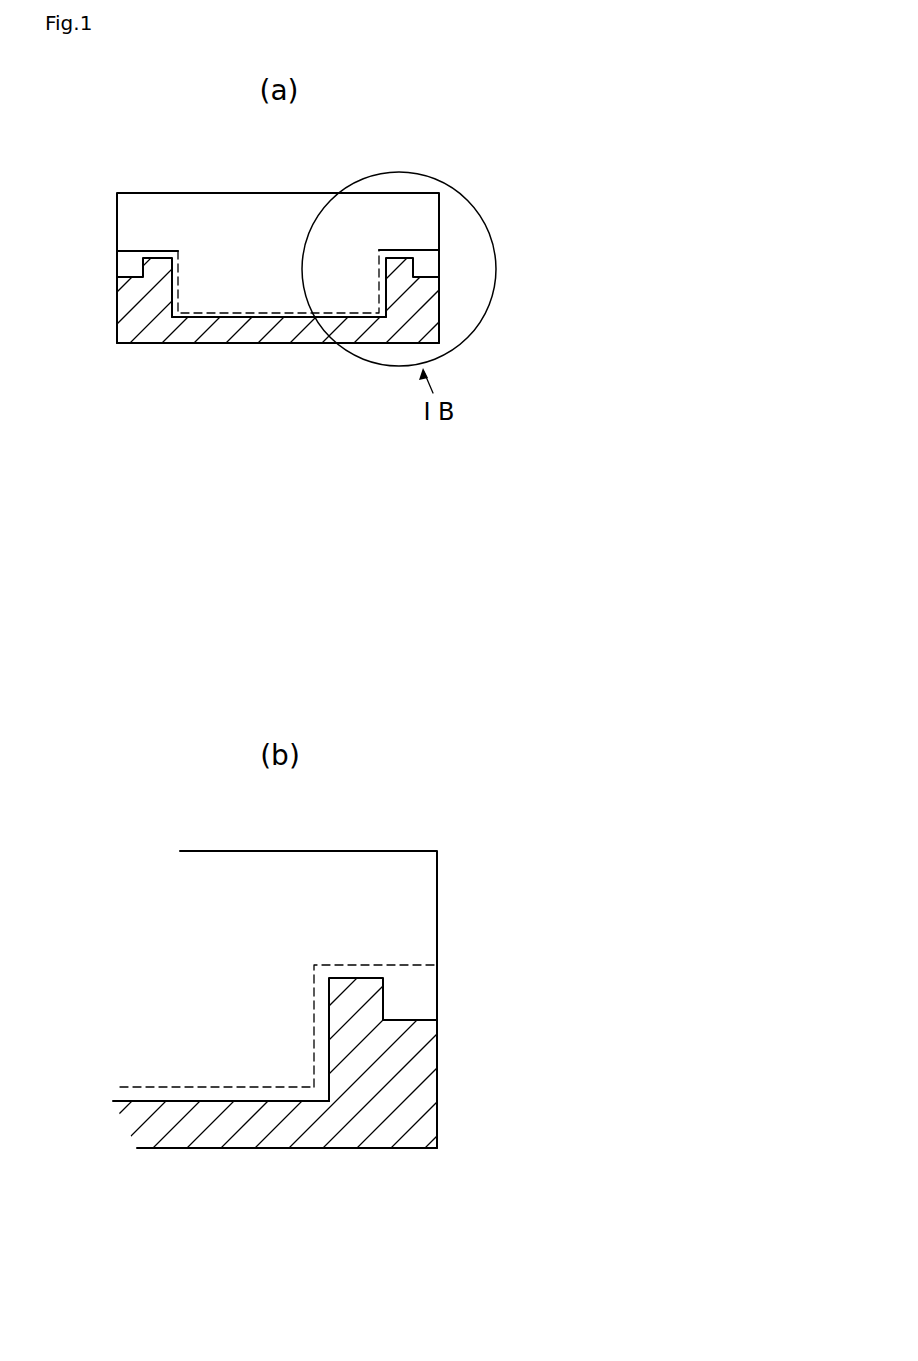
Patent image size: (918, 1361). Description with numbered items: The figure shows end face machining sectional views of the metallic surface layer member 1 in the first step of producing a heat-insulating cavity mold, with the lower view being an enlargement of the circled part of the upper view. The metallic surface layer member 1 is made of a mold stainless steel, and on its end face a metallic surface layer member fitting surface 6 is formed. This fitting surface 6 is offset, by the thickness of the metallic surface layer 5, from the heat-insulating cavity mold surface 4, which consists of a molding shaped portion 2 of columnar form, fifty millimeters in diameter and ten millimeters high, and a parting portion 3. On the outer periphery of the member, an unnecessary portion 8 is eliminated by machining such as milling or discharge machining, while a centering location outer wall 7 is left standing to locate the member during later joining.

The metallic surface layer member 1 is at (403, 202).
The molding shaped portion 2 is at (238, 1087).
The parting portion 3 is at (397, 965).
The heat-insulating cavity mold surface 4 is at (358, 668).
The metallic surface layer 5 is at (293, 1093).
The metallic surface layer member fitting surface 6 is at (280, 1103).
The centering location outer wall 7 is at (425, 267).
The unnecessary portion 8 is at (412, 332).